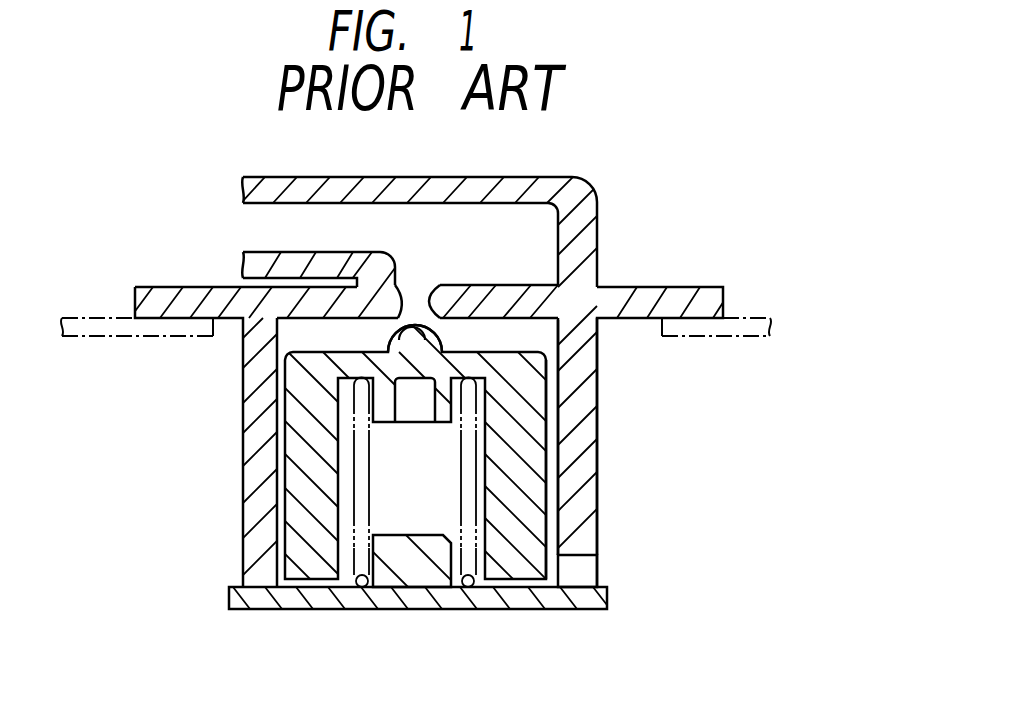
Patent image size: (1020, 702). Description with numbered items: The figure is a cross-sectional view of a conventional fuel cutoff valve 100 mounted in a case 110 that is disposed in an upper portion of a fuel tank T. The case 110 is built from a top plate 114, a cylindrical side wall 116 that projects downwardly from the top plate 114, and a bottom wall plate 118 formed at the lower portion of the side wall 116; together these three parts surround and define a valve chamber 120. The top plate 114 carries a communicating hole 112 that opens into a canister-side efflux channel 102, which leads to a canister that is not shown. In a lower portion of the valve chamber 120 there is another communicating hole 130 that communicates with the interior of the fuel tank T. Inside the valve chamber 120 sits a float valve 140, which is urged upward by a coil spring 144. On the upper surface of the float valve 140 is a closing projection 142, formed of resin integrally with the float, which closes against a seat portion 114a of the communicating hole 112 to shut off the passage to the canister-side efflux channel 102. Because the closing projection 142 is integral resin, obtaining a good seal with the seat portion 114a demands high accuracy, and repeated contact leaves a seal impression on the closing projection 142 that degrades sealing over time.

The fuel cutoff valve 100 is at (614, 194).
The canister-side efflux channel 102 is at (247, 236).
The case 110 is at (608, 401).
The communicating hole 112 is at (416, 293).
The top plate 114 is at (508, 283).
The seat portion 114a is at (438, 344).
The side wall 116 is at (583, 475).
The bottom wall plate 118 is at (583, 597).
The valve chamber 120 is at (550, 525).
The communicating hole 130 is at (578, 570).
The float valve 140 is at (297, 468).
The closing projection 142 is at (397, 342).
The coil spring 144 is at (363, 477).
The fuel tank T is at (748, 322).